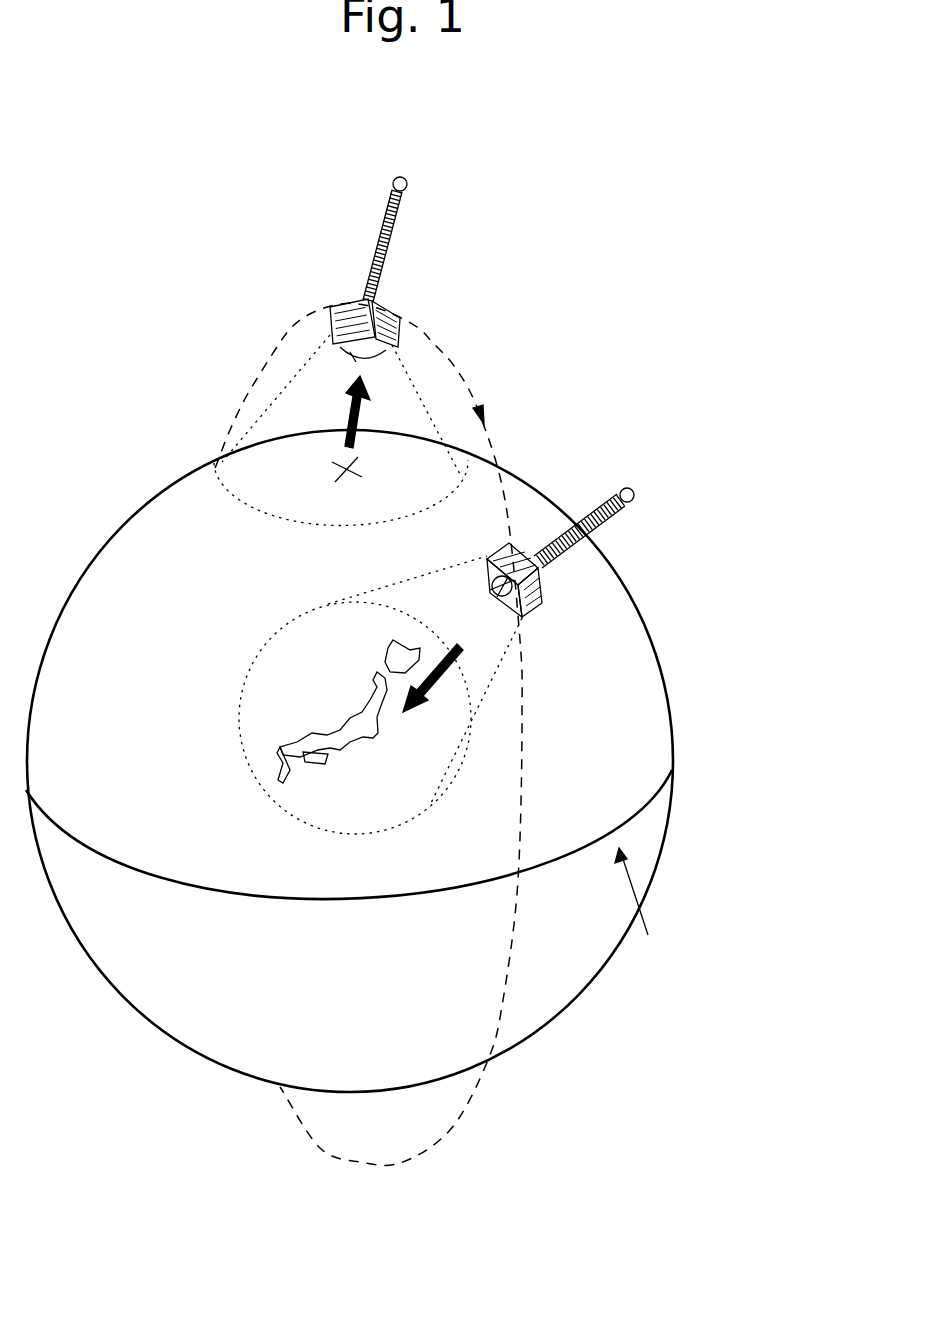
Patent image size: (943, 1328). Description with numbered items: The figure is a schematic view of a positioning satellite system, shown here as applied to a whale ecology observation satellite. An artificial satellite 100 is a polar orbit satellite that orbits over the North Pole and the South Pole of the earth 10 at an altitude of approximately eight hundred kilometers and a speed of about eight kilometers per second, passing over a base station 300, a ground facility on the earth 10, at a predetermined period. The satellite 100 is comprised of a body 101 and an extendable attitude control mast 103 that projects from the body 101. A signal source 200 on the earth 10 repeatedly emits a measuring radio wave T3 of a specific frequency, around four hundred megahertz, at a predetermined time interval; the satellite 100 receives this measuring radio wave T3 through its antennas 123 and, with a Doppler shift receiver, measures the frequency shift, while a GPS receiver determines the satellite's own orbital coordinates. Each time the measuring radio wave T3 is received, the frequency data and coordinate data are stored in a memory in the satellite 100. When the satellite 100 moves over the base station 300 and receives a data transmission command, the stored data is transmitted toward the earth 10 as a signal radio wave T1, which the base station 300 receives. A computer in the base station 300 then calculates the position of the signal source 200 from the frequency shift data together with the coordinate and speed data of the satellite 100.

The earth 10 is at (636, 687).
The artificial satellite 100 is at (476, 375).
The body 101 is at (343, 306).
The attitude control mast 103 is at (378, 240).
The antennas 123 is at (358, 353).
The signal source 200 is at (368, 466).
The base station 300 is at (372, 735).
The signal radio wave T1 is at (440, 672).
The measuring radio wave T3 is at (347, 412).